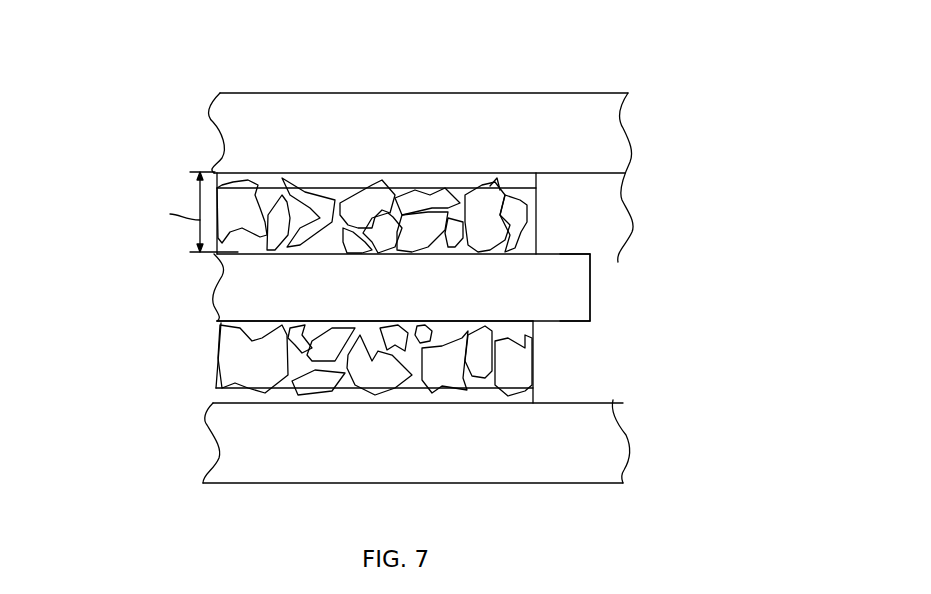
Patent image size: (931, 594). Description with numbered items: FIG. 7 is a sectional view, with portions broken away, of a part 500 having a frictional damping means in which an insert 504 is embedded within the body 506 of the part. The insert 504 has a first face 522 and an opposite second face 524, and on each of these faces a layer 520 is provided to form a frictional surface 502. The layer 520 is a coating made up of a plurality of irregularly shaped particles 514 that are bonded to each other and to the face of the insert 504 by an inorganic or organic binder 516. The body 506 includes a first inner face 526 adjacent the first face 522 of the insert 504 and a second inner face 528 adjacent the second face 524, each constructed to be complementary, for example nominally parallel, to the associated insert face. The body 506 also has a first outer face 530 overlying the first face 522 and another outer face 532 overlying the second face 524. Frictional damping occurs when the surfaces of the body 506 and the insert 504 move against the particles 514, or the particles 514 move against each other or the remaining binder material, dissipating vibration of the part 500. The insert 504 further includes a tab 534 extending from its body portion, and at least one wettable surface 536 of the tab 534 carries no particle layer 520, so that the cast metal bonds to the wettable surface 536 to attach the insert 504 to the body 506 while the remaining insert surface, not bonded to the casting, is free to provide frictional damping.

The part 500 is at (697, 112).
The frictional surface 502 is at (368, 184).
The insert 504 is at (510, 292).
The body 506 is at (358, 296).
The particles 514 is at (448, 177).
The binder 516 is at (262, 190).
The layer 520 is at (247, 173).
The first face 522 is at (218, 268).
The second face 524 is at (216, 316).
The first inner face 526 is at (413, 173).
The second inner face 528 is at (410, 405).
The first outer face 530 is at (505, 93).
The outer face 532 is at (518, 483).
The tab 534 is at (563, 280).
The wettable surface 536 is at (562, 253).